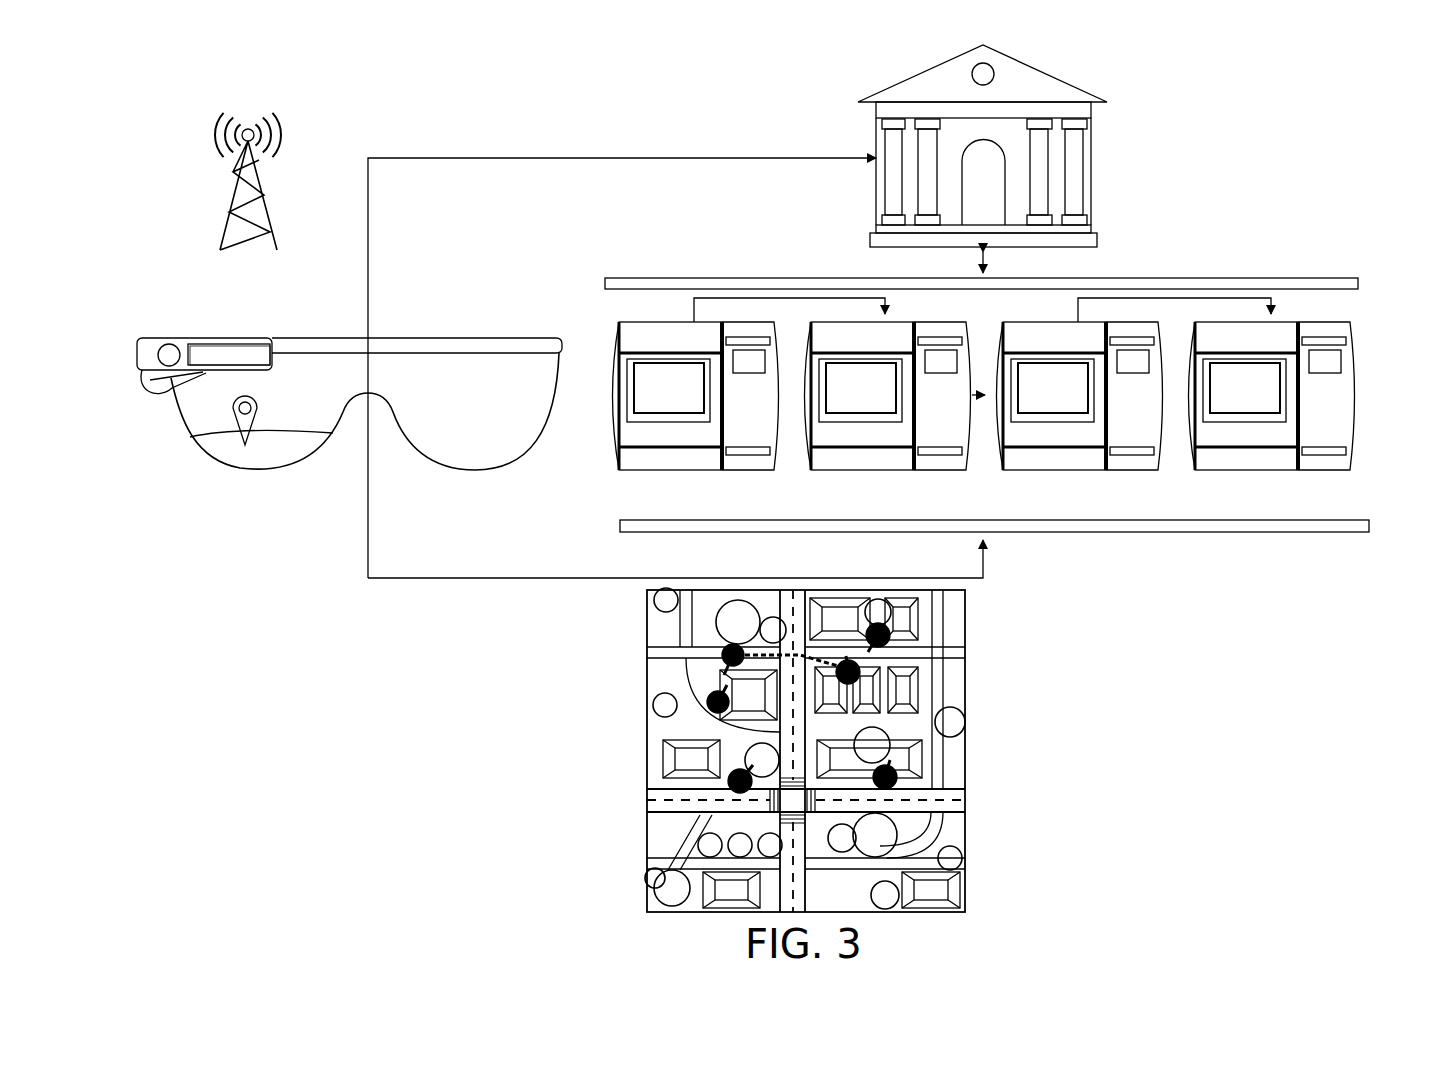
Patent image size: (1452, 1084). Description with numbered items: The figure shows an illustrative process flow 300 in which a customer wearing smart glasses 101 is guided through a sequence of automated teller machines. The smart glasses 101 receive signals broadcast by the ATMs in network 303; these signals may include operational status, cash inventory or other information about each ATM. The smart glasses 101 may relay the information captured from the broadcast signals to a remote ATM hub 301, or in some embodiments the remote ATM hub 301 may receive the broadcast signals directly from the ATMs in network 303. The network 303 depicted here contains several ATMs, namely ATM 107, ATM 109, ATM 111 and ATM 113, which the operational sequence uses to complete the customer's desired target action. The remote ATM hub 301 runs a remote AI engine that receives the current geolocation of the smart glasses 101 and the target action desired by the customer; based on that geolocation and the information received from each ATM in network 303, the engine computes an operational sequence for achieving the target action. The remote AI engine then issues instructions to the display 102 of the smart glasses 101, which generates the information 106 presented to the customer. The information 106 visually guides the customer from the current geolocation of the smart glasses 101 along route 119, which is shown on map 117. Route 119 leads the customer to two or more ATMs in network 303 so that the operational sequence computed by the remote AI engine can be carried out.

The process flow 300 is at (226, 78).
The remote ATM hub 301 is at (1066, 80).
The network 303 is at (1360, 288).
The smart glasses 101 is at (422, 340).
The display 102 is at (228, 343).
The information 106 is at (232, 456).
The ATM 107 is at (748, 472).
The ATM 109 is at (940, 472).
The ATM 111 is at (1132, 472).
The ATM 113 is at (1346, 486).
The map 117 is at (966, 690).
The route 119 is at (728, 688).